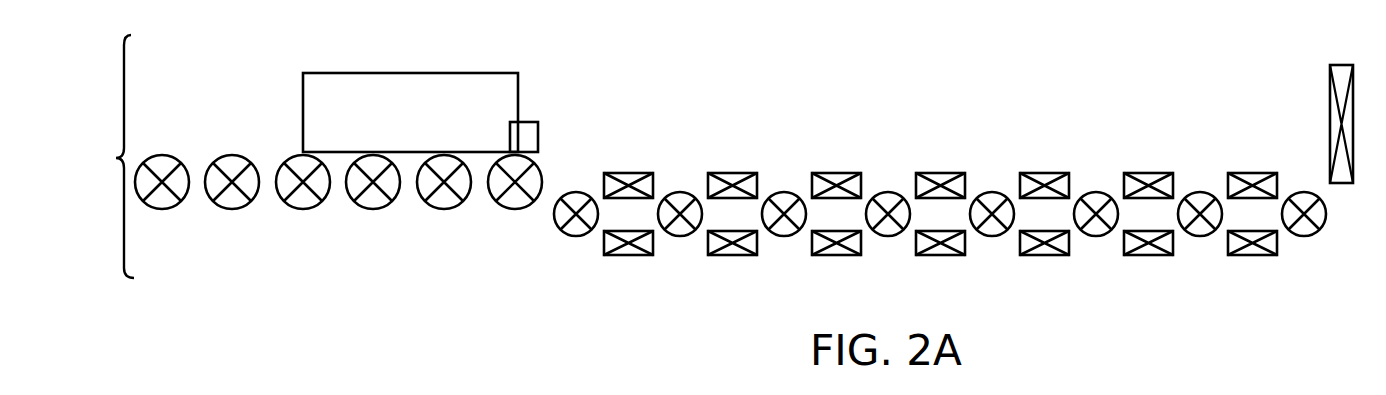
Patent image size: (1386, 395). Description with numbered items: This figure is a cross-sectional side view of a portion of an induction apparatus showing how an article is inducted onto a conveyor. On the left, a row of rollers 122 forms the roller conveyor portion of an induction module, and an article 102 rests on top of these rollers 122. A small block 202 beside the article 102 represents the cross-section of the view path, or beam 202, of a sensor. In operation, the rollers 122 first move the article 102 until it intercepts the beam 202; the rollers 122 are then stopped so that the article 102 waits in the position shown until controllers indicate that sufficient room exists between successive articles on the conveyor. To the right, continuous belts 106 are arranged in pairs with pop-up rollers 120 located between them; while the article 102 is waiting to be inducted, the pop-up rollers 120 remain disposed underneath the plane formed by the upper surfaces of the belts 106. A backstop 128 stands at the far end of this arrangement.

The article 102 is at (434, 127).
The beam 202 is at (538, 131).
The rollers 122 is at (501, 204).
The pop-up rollers 120 is at (787, 227).
The continuous belts 106 is at (856, 231).
The backstop 128 is at (1330, 95).